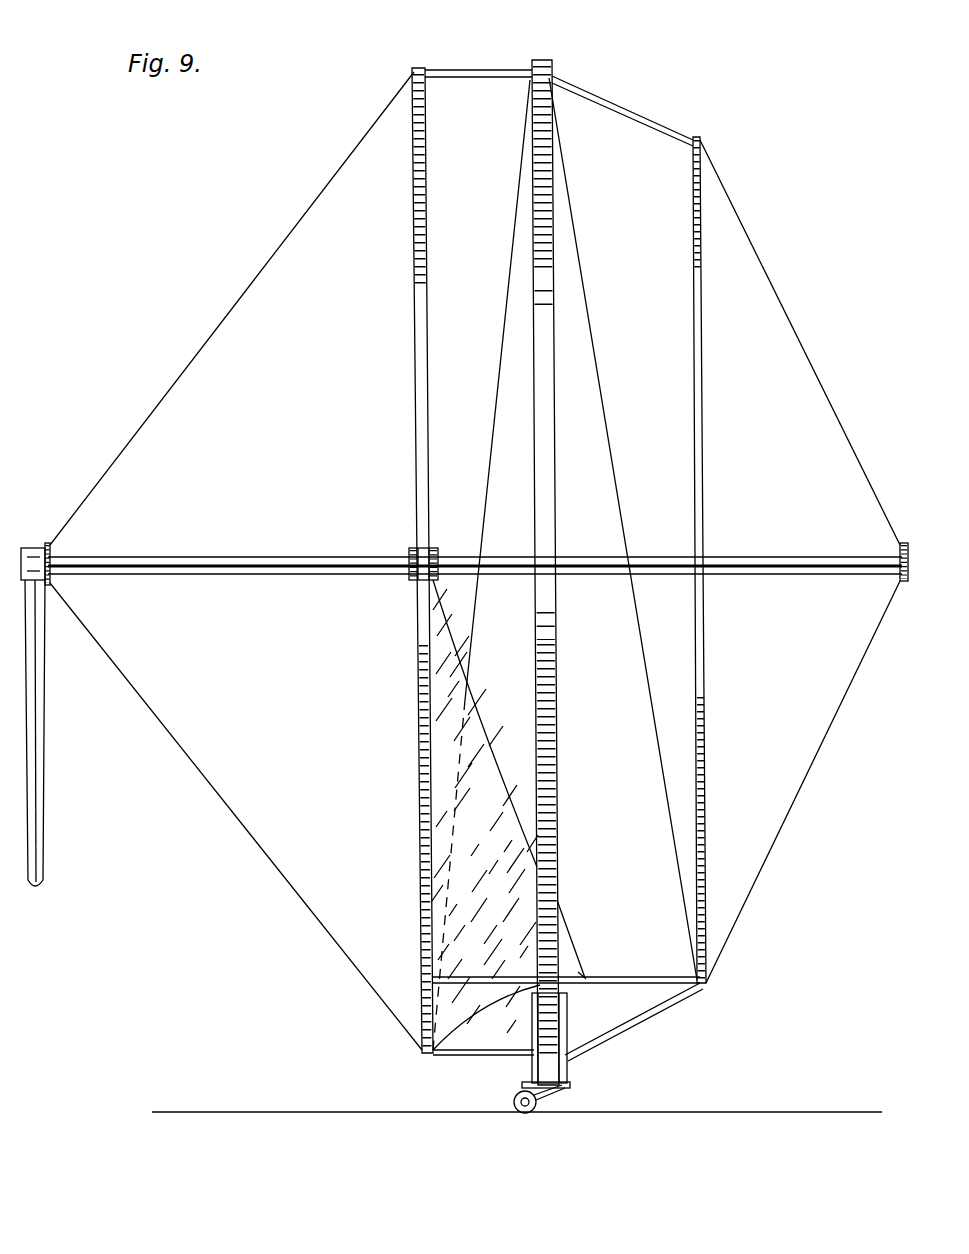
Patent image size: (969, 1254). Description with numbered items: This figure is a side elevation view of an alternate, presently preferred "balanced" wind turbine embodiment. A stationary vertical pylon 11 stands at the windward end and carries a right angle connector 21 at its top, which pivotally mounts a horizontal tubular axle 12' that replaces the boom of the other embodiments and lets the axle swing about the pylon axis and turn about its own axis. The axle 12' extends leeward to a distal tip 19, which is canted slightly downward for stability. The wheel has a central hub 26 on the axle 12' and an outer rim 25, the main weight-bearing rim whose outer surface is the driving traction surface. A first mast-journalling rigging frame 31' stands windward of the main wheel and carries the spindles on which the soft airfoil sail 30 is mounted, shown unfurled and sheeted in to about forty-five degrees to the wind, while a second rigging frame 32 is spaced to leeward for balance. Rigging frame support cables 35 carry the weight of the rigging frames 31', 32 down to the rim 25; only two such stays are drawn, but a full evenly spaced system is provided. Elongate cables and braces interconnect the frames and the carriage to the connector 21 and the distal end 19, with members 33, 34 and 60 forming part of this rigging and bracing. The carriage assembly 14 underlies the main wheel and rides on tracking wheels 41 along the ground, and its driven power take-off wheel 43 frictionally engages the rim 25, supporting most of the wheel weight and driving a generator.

The pylon 11 is at (45, 860).
The tubular axle 12' is at (475, 533).
The carriage assembly 14 is at (580, 1072).
The distal tip 19 is at (905, 540).
The right angle connector 21 is at (33, 546).
The outer rim 25 is at (548, 58).
The central hub 26 is at (410, 548).
The sail 30 is at (495, 867).
The first rigging frame 31' is at (391, 560).
The second rigging frame 32 is at (705, 367).
The top spreader bar 33 is at (465, 68).
The stay line 34 is at (140, 432).
The rigging frame support cables 35 is at (595, 340).
The tracking wheels 41 is at (525, 1114).
The power take-off wheel 43 is at (567, 1002).
The bottom bar 60 is at (637, 976).